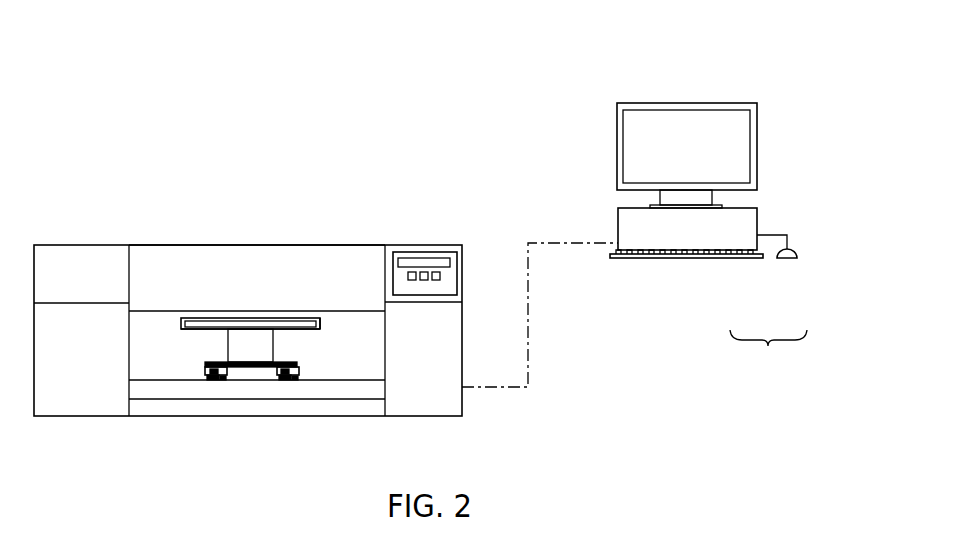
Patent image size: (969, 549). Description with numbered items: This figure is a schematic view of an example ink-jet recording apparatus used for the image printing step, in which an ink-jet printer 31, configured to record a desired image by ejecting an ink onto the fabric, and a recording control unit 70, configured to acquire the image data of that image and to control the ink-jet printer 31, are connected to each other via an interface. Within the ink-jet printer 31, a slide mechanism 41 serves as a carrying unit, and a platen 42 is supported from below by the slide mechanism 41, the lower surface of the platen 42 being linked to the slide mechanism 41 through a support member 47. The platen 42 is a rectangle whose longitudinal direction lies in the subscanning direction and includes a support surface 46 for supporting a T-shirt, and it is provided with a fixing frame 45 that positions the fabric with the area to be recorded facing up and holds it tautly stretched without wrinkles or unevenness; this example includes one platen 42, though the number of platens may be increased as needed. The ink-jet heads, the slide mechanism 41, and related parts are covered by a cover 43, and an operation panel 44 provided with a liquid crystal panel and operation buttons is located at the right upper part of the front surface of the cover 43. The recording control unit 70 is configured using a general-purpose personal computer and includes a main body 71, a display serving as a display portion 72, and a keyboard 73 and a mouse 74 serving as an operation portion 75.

The ink-jet printer 31 is at (464, 204).
The slide mechanism 41 is at (206, 381).
The platen 42 is at (212, 330).
The cover 43 is at (178, 245).
The operation panel 44 is at (455, 278).
The fixing frame 45 is at (321, 318).
The support surface 46 is at (214, 320).
The support member 47 is at (266, 353).
The recording control unit 70 is at (746, 57).
The main body 71 is at (752, 226).
The display portion 72 is at (750, 153).
The keyboard 73 is at (749, 259).
The mouse 74 is at (787, 262).
The operation portion 75 is at (768, 353).